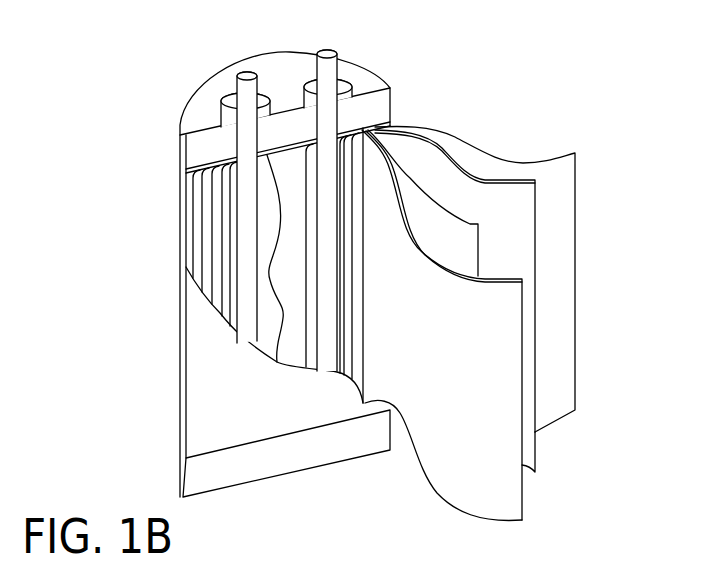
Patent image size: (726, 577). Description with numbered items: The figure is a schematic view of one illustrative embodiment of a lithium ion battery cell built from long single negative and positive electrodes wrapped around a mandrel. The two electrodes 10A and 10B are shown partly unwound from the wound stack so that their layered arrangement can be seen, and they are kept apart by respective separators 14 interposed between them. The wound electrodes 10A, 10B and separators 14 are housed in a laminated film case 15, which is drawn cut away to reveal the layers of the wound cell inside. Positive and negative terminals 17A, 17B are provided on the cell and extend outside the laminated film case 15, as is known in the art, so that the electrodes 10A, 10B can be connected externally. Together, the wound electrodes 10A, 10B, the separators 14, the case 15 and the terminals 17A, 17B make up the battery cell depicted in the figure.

The laminated film case 15 is at (180, 337).
The positive terminal 17A is at (247, 72).
The negative terminal 17B is at (330, 53).
The negative electrode 10A is at (495, 490).
The positive electrode 10B is at (513, 207).
The separator 14 is at (462, 249).